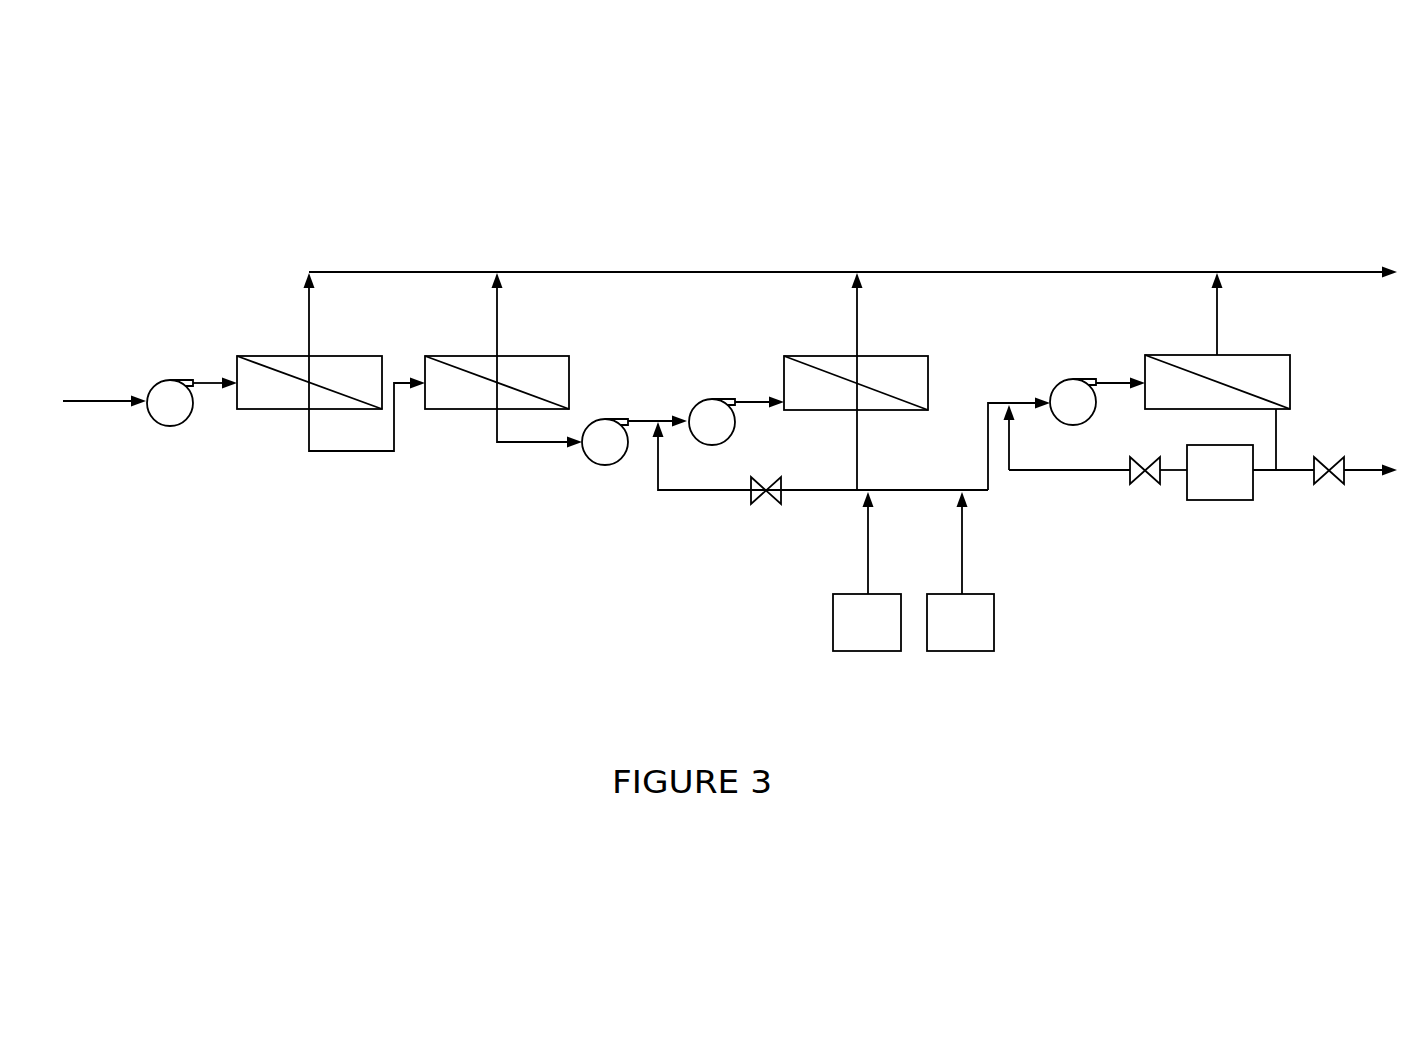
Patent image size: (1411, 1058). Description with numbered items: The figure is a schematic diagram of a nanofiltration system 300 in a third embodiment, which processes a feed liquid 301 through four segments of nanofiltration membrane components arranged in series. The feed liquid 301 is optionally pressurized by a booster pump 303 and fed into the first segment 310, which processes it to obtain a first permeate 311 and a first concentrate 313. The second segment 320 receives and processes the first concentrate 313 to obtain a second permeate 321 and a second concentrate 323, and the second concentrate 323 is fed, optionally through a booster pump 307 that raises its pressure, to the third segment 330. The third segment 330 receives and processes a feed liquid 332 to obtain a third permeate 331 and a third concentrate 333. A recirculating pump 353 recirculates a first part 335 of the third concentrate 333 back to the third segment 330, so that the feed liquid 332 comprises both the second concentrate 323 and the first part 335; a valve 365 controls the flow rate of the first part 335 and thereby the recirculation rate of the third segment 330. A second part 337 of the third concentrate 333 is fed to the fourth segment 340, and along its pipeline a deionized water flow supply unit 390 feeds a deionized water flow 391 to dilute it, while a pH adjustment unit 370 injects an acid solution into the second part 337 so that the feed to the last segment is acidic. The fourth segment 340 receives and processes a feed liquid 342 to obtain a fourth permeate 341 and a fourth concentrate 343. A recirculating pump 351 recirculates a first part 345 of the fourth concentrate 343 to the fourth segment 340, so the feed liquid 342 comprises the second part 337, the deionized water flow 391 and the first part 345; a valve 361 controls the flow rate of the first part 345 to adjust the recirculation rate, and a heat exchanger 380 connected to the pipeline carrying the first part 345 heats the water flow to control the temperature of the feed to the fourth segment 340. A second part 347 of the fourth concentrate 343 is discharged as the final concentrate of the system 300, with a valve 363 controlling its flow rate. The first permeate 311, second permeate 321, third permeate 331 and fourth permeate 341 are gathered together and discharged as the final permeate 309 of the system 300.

The nanofiltration system 300 is at (1030, 120).
The feed liquid 301 is at (103, 399).
The booster pump 303 is at (175, 426).
The booster pump 307 is at (605, 465).
The final permeate 309 is at (1293, 270).
The first segment 310 is at (265, 355).
The first permeate 311 is at (311, 323).
The first concentrate 313 is at (357, 453).
The second segment 320 is at (452, 355).
The second permeate 321 is at (498, 322).
The second concentrate 323 is at (525, 444).
The third segment 330 is at (810, 355).
The third permeate 331 is at (858, 322).
The feed liquid 332 is at (748, 399).
The third concentrate 333 is at (858, 448).
The first part of the third concentrate 335 is at (826, 492).
The second part of the third concentrate 337 is at (948, 489).
The fourth segment 340 is at (1174, 353).
The fourth permeate 341 is at (1220, 322).
The feed liquid 342 is at (1118, 378).
The fourth concentrate 343 is at (1278, 440).
The first part of the fourth concentrate 345 is at (1052, 475).
The second part of the fourth concentrate 347 is at (1367, 467).
The recirculating pump 351 is at (1061, 381).
The recirculating pump 353 is at (707, 398).
The valve 361 is at (1145, 488).
The valve 363 is at (1329, 488).
The valve 365 is at (763, 508).
The pH adjustment unit 370 is at (957, 653).
The heat exchanger 380 is at (1218, 502).
The deionized water flow supply unit 390 is at (866, 653).
The deionized water flow 391 is at (869, 557).